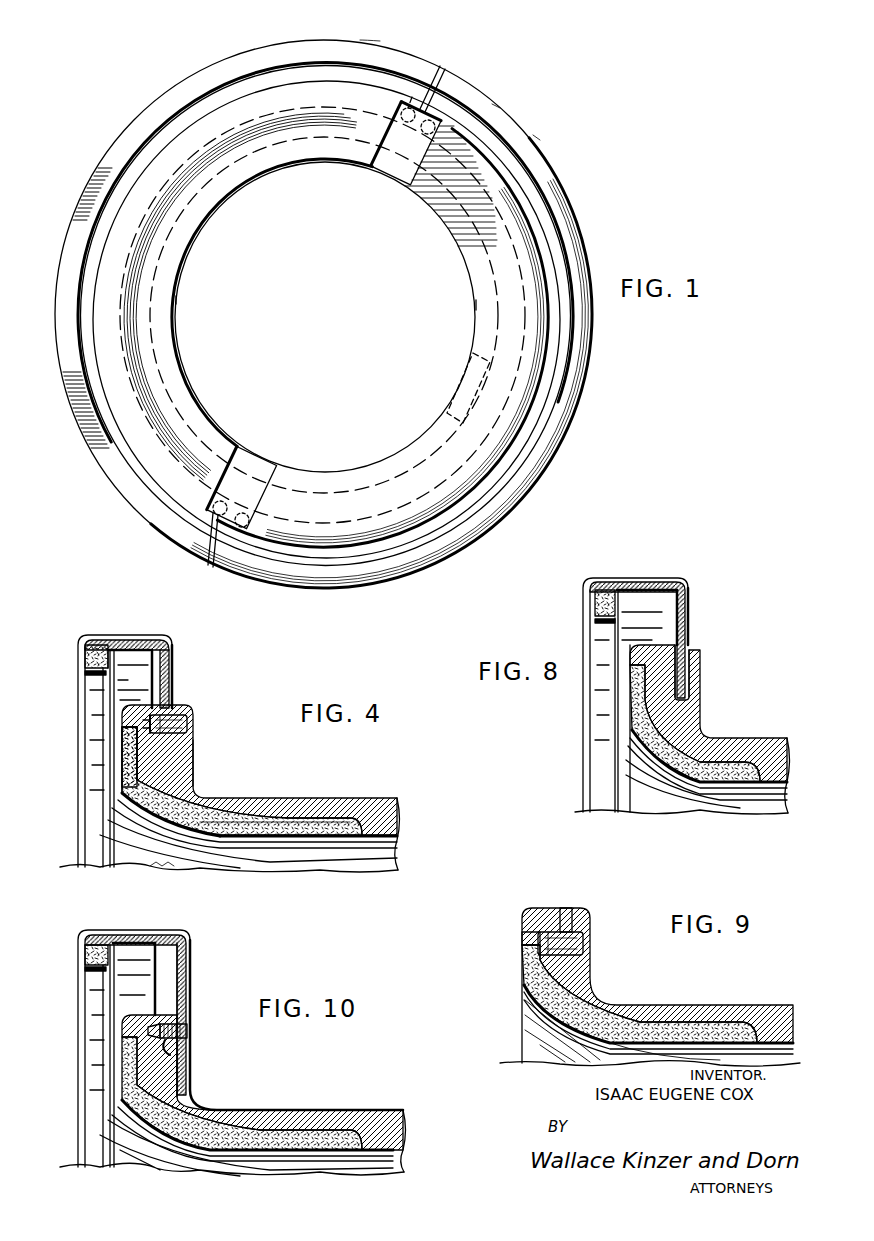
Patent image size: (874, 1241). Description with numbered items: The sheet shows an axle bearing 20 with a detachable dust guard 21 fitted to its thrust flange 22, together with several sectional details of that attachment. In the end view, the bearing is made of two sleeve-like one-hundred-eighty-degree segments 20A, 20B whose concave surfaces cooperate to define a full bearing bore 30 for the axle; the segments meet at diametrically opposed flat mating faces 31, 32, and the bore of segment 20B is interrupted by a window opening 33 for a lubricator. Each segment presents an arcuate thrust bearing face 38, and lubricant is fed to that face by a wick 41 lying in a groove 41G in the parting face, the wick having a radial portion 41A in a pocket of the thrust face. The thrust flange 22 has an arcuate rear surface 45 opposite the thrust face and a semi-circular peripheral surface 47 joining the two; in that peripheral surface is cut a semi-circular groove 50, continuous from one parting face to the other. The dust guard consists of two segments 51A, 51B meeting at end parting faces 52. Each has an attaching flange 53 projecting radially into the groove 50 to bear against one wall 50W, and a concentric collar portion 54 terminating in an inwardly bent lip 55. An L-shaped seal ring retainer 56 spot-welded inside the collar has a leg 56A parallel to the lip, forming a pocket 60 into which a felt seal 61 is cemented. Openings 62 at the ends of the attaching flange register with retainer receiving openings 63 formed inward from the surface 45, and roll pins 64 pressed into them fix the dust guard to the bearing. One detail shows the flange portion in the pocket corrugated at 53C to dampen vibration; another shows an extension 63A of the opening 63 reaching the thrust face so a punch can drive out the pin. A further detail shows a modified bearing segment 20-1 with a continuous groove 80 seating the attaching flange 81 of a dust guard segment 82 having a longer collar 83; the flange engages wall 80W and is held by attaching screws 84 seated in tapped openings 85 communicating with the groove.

In FIG. 1, the bearing 20 is at (539, 132).
In FIG. 4, the bearing 20 is at (358, 790).
In FIG. 10, the bearing segment 20-1 is at (348, 1100).
In FIG. 1, the bearing segment 20A is at (178, 300).
In FIG. 1, the bearing segment 20B is at (475, 305).
In FIG. 1, the dust guard 21 is at (208, 64).
In FIG. 4, the thrust flange 22 is at (193, 778).
In FIG. 1, the bearing bore 30 is at (472, 272).
In FIG. 1, the mating face 31 is at (366, 162).
In FIG. 1, the mating face 32 is at (268, 470).
In FIG. 1, the window opening 33 is at (456, 380).
In FIG. 1, the thrust bearing face 38 is at (200, 128).
In FIG. 4, the thrust bearing face 38 is at (116, 742).
In FIG. 9, the thrust bearing face 38 is at (521, 935).
In FIG. 4, the wick 41 is at (318, 826).
In FIG. 8, the wick 41 is at (768, 768).
In FIG. 9, the wick 41 is at (745, 1025).
In FIG. 10, the wick 41 is at (312, 1135).
In FIG. 4, the radial portion 41A is at (130, 765).
In FIG. 1, the groove 41G is at (402, 170).
In FIG. 4, the groove 41G is at (290, 830).
In FIG. 8, the groove 41G is at (748, 768).
In FIG. 9, the groove 41G is at (718, 1025).
In FIG. 10, the groove 41G is at (290, 1138).
In FIG. 4, the inner surface 45 is at (193, 760).
In FIG. 4, the peripheral surface 47 is at (128, 700).
In FIG. 10, the peripheral surface 47 is at (158, 1010).
In FIG. 1, the groove 50 is at (157, 193).
In FIG. 4, the groove 50 is at (193, 745).
In FIG. 8, the groove 50 is at (700, 705).
In FIG. 4, the groove wall 50W is at (135, 793).
In FIG. 1, the dust guard segment 51A is at (371, 44).
In FIG. 4, the dust guard segment 51A is at (172, 662).
In FIG. 1, the dust guard segment 51B is at (497, 102).
In FIG. 1, the parting face 52 is at (445, 80).
In FIG. 4, the attaching flange 53 is at (259, 741).
In FIG. 8, the attaching flange 53 is at (688, 610).
In FIG. 8, the corrugation 53C is at (685, 672).
In FIG. 4, the collar portion 54 is at (138, 628).
In FIG. 1, the lip 55 is at (125, 150).
In FIG. 4, the lip 55 is at (77, 648).
In FIG. 4, the seal ring retainer 56 is at (108, 662).
In FIG. 4, the leg 56A is at (122, 640).
In FIG. 4, the pocket 60 is at (95, 652).
In FIG. 1, the seal 61 is at (238, 85).
In FIG. 4, the seal 61 is at (100, 674).
In FIG. 1, the opening 62 is at (412, 97).
In FIG. 4, the opening 62 is at (187, 712).
In FIG. 4, the retainer receiving opening 63 is at (187, 716).
In FIG. 9, the retainer receiving opening 63 is at (583, 945).
In FIG. 9, the extension 63A is at (525, 950).
In FIG. 4, the roll pin 64 is at (172, 724).
In FIG. 9, the roll pin 64 is at (568, 930).
In FIG. 10, the groove 80 is at (170, 1070).
In FIG. 10, the groove wall 80W is at (175, 1040).
In FIG. 10, the attaching flange 81 is at (175, 1028).
In FIG. 10, the dust guard segment 82 is at (160, 930).
In FIG. 10, the collar 83 is at (110, 930).
In FIG. 10, the attaching screw 84 is at (187, 1033).
In FIG. 10, the tapped opening 85 is at (133, 1062).